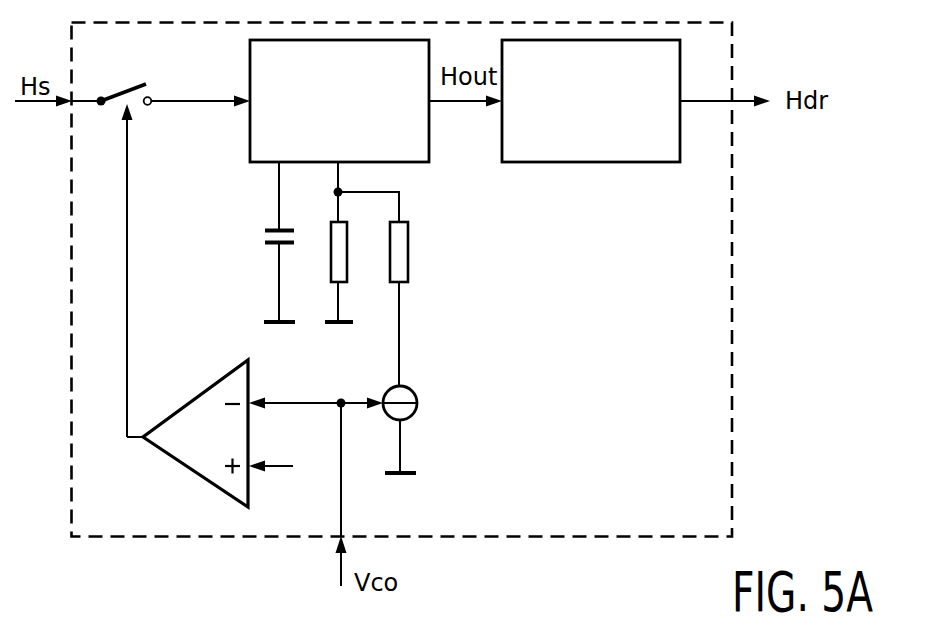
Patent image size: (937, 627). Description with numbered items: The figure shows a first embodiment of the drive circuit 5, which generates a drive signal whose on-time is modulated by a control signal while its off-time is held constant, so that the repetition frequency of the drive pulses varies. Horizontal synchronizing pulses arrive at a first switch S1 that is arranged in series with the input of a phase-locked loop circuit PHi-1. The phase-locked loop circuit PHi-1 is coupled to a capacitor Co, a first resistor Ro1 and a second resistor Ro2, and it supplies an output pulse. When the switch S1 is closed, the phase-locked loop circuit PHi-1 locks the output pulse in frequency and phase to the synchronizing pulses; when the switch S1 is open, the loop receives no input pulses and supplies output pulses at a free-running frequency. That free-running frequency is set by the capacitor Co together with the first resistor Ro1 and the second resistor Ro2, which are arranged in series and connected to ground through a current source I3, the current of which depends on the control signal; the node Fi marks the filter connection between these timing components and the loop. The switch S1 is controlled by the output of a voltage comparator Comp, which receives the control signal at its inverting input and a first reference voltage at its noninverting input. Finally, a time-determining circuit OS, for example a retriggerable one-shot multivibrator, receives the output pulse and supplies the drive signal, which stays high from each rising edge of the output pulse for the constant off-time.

The drive circuit 5 is at (433, 280).
The first switch S1 is at (119, 90).
The phase-locked loop circuit PHi-1 is at (339, 101).
The time-determining circuit OS is at (591, 101).
The capacitor Co is at (264, 237).
The filter node Fi is at (327, 192).
The first resistor Ro1 is at (333, 271).
The second resistor Ro2 is at (408, 270).
The current source I3 is at (436, 380).
The voltage comparator Comp is at (255, 433).